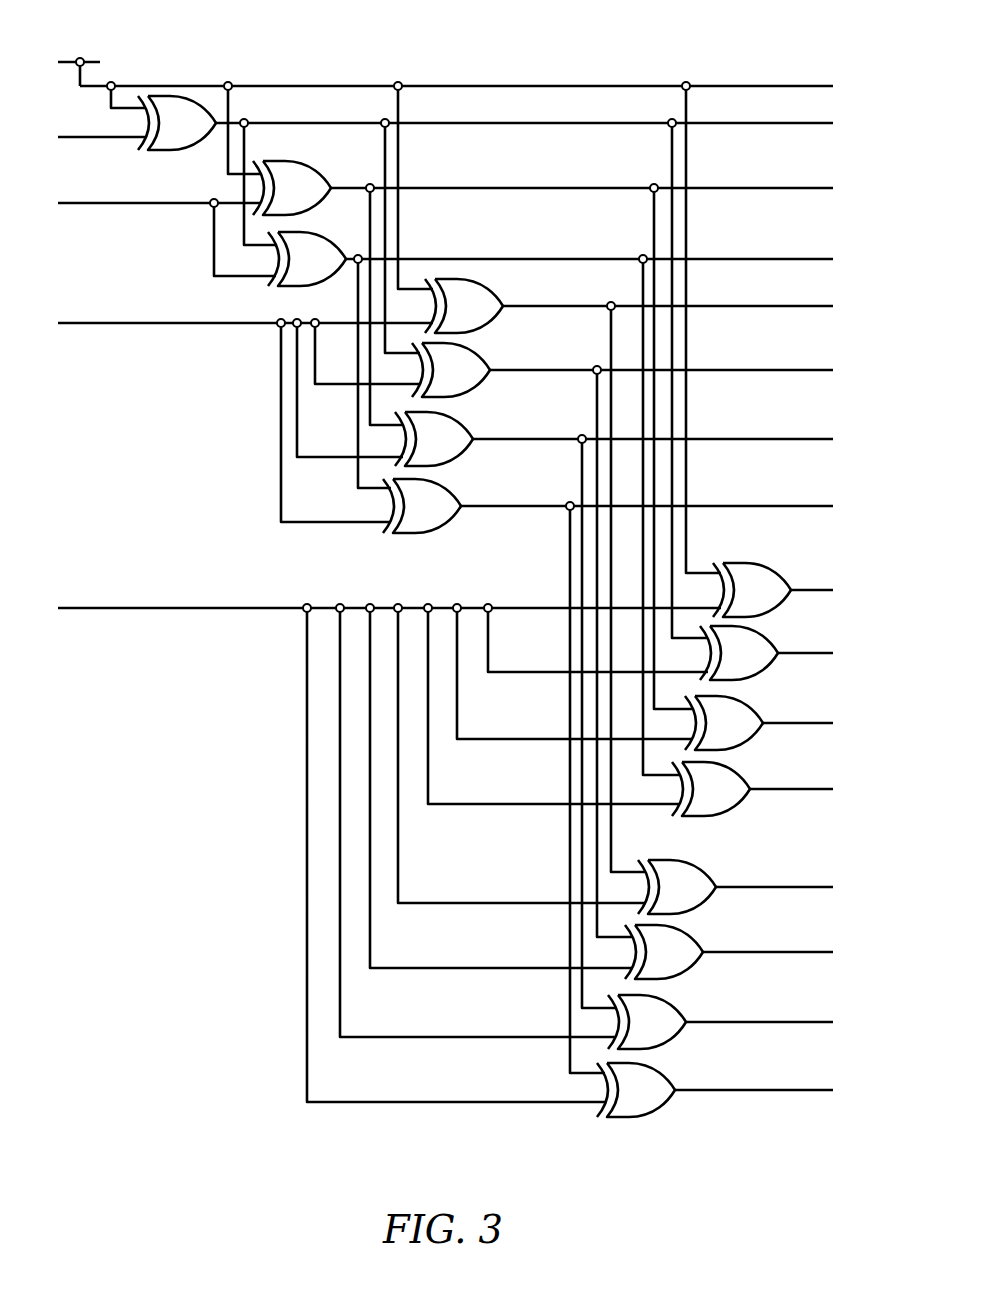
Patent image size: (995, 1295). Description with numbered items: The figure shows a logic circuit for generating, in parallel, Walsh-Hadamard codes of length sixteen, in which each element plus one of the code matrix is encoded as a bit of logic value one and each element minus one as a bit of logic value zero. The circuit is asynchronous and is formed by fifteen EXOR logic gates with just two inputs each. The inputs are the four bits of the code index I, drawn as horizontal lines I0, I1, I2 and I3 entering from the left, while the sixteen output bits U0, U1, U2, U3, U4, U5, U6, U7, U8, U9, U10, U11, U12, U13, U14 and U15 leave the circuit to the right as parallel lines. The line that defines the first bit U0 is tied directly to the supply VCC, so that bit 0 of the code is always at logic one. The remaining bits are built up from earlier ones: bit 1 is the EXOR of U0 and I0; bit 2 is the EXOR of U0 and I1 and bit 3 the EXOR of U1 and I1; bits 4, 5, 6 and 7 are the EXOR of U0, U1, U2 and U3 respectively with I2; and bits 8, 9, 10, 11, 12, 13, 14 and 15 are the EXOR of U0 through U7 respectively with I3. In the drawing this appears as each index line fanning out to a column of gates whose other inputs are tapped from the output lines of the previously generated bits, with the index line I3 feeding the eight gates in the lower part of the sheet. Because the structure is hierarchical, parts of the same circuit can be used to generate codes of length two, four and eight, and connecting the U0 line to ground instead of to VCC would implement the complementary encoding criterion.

The bit U0 0 is at (456, 66).
The bit U1 1 is at (524, 114).
The bit U2 2 is at (582, 180).
The bit U3 3 is at (589, 252).
The bit U4 4 is at (668, 296).
The bit U5 5 is at (661, 360).
The bit U6 6 is at (653, 429).
The bit U7 7 is at (647, 496).
The bit U8 8 is at (812, 579).
The bit U9 9 is at (805, 643).
The bit U10 10 is at (801, 709).
The bit U11 11 is at (795, 778).
The bit U12 12 is at (778, 874).
The bit U13 13 is at (771, 940).
The bit U14 14 is at (763, 1006).
The bit U15 15 is at (757, 1078).
The first code bit U0 is at (456, 66).
The code bit U1 is at (524, 114).
The code bit U2 is at (582, 180).
The code bit U3 is at (589, 252).
The code bit U4 is at (668, 296).
The code bit U5 is at (661, 360).
The code bit U6 is at (653, 429).
The code bit U7 is at (647, 496).
The code bit U8 is at (812, 579).
The code bit U9 is at (805, 643).
The code bit U10 is at (801, 709).
The code bit U11 is at (795, 778).
The code bit U12 is at (778, 874).
The code bit U13 is at (771, 940).
The code bit U14 is at (763, 1006).
The code bit U15 is at (757, 1078).
The index bit I0 is at (102, 127).
The index bit I1 is at (159, 189).
The index bit I2 is at (245, 308).
The index bit I3 is at (389, 591).
The supply VCC is at (91, 50).